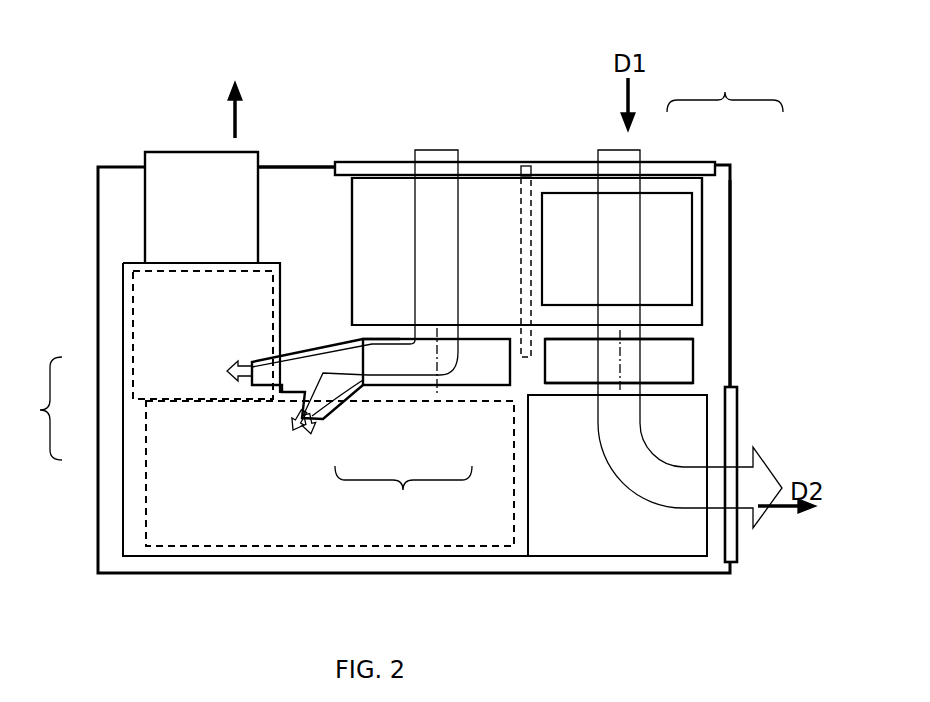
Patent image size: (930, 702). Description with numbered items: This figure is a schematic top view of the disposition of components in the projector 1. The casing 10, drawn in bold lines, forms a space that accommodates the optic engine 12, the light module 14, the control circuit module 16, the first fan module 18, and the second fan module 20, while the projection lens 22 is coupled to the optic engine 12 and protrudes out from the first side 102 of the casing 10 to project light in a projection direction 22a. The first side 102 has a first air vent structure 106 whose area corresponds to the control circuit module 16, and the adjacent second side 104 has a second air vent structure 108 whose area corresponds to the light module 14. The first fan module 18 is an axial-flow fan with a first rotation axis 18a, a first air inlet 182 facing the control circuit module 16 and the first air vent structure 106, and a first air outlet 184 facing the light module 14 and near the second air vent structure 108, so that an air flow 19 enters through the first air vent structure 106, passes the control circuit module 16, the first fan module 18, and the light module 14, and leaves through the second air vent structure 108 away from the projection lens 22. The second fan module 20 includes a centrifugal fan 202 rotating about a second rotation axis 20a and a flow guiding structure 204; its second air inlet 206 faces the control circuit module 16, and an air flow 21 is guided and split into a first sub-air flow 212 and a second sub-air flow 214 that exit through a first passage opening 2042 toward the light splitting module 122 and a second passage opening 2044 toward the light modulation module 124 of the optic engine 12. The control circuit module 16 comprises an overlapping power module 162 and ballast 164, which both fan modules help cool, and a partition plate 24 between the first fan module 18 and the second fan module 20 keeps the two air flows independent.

The projector 1 is at (133, 84).
The casing 10 is at (98, 204).
The first side 102 is at (290, 167).
The second side 104 is at (733, 255).
The first air vent structure 106 is at (487, 165).
The second air vent structure 108 is at (737, 546).
The optic engine 12 is at (34, 408).
The light splitting module 122 is at (146, 441).
The light modulation module 124 is at (133, 373).
The light module 14 is at (605, 538).
The control circuit module 16 is at (725, 87).
The power module 162 is at (676, 189).
The ballast 164 is at (683, 225).
The first fan module 18 is at (683, 370).
The first air inlet 182 is at (672, 338).
The first air outlet 184 is at (672, 386).
The first rotation axis 18a is at (622, 360).
The air flow 19 is at (613, 148).
The second fan module 20 is at (403, 497).
The centrifugal fan 202 is at (475, 378).
The flow guiding structure 204 is at (346, 373).
The second air inlet 206 is at (388, 339).
The second rotation axis 20a is at (437, 360).
The first passage opening 2042 is at (298, 436).
The second passage opening 2044 is at (250, 361).
The air flow 21 is at (436, 148).
The first sub-air flow 212 is at (308, 440).
The second sub-air flow 214 is at (228, 372).
The projection lens 22 is at (200, 167).
The projection direction 22a is at (239, 96).
The partition plate 24 is at (521, 218).